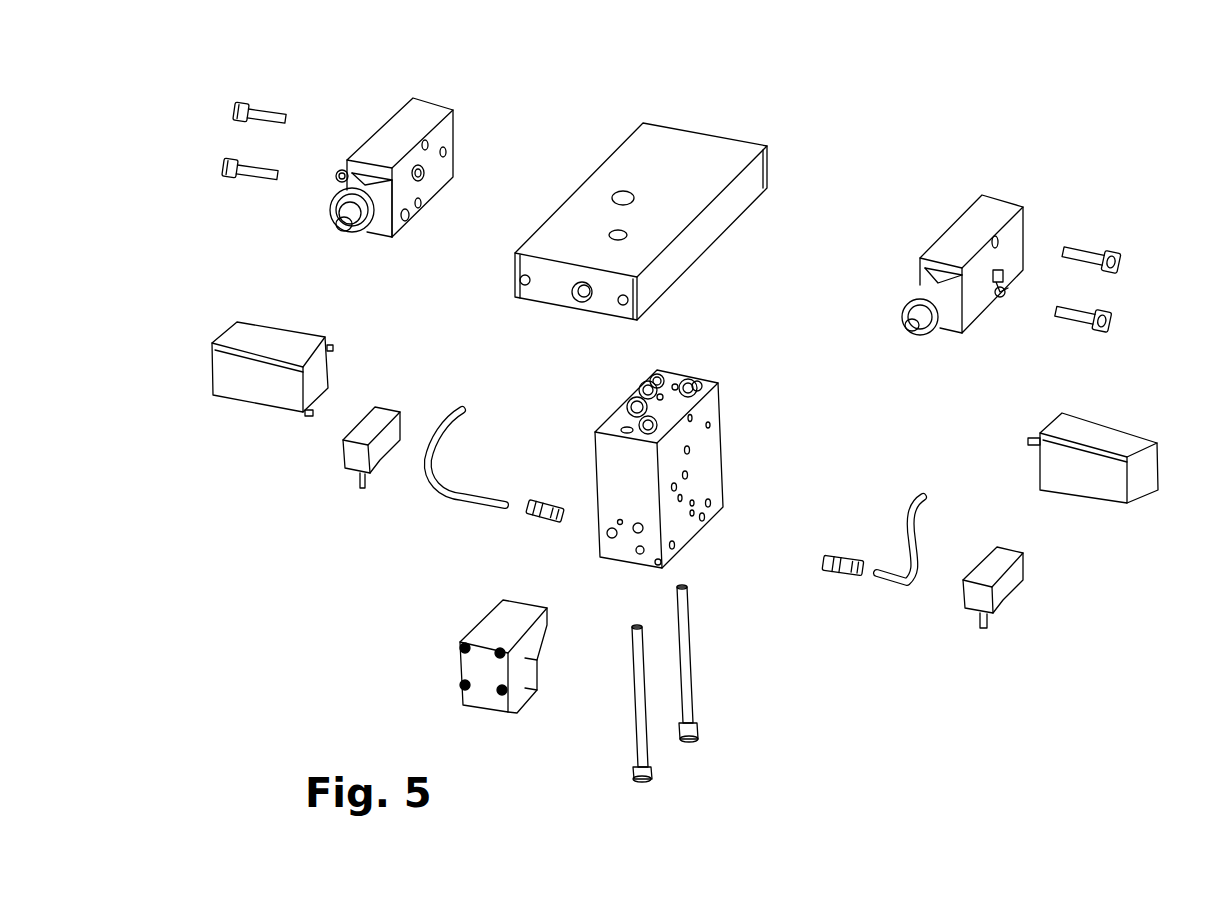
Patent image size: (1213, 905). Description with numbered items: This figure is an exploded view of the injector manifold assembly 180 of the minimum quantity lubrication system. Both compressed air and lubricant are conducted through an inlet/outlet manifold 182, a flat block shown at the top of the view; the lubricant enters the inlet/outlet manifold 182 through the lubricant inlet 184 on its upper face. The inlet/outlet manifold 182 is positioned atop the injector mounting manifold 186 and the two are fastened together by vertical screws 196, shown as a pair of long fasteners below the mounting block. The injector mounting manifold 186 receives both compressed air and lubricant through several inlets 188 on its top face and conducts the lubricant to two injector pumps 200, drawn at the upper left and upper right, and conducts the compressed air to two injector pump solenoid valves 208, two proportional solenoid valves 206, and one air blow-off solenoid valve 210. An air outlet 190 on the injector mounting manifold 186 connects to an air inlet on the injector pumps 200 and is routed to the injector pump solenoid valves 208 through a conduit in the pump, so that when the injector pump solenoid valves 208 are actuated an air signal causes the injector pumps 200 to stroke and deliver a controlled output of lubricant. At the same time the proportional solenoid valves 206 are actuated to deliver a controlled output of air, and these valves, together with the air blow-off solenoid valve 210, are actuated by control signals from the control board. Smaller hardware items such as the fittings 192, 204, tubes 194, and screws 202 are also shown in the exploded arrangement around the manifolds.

The injector manifold assembly 180 is at (1015, 71).
The inlet/outlet manifold 182 is at (669, 148).
The lubricant inlet 184 is at (617, 194).
The injector mounting manifold 186 is at (723, 457).
The inlets 188 is at (628, 400).
The air outlet 190 is at (676, 489).
The fitting 192 is at (527, 515).
The tube 194 is at (437, 492).
The vertical screws 196 is at (688, 737).
The injector pumps 200 is at (393, 135).
The screws 202 is at (252, 160).
The fitting 204 is at (338, 173).
The proportional solenoid valves 206 is at (245, 337).
The injector pump solenoid valves 208 is at (352, 458).
The air blow-off solenoid valve 210 is at (475, 668).